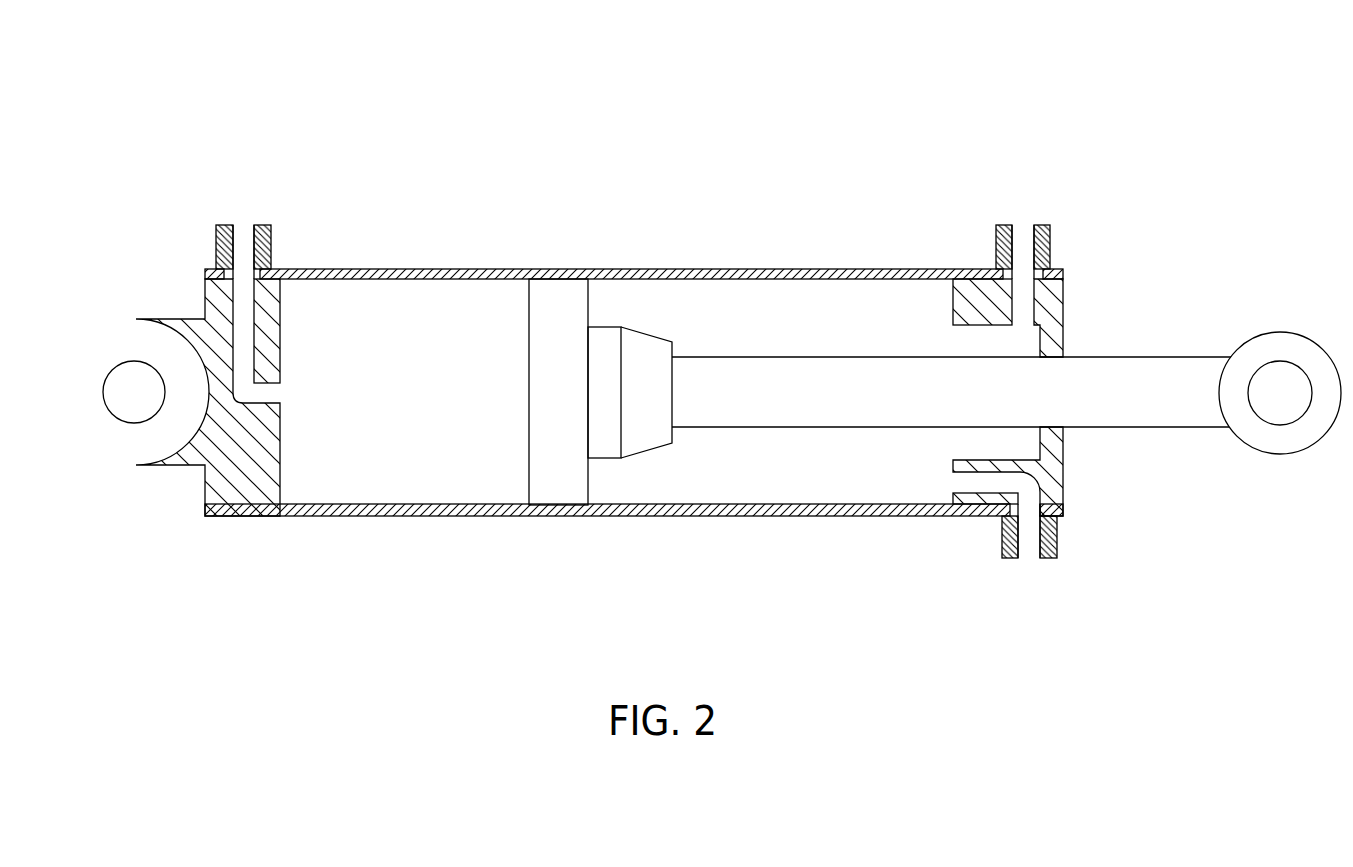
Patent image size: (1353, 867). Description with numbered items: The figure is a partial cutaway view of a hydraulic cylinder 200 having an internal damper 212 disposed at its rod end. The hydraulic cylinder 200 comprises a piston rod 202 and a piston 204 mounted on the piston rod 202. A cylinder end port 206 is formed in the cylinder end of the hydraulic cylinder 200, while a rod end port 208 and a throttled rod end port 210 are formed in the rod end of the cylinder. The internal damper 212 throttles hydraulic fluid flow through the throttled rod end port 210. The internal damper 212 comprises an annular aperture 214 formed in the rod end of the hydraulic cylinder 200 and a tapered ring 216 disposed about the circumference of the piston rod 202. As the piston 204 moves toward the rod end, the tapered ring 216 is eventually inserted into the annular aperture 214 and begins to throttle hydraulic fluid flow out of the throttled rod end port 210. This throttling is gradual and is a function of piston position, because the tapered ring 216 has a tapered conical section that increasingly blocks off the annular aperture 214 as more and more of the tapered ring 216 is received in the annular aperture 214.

The hydraulic cylinder 200 is at (722, 327).
The piston rod 202 is at (792, 355).
The piston 204 is at (588, 297).
The cylinder end port 206 is at (243, 216).
The rod end port 208 is at (1031, 567).
The throttled rod end port 210 is at (1026, 217).
The internal damper 212 is at (874, 467).
The annular aperture 214 is at (939, 340).
The tapered ring 216 is at (657, 337).